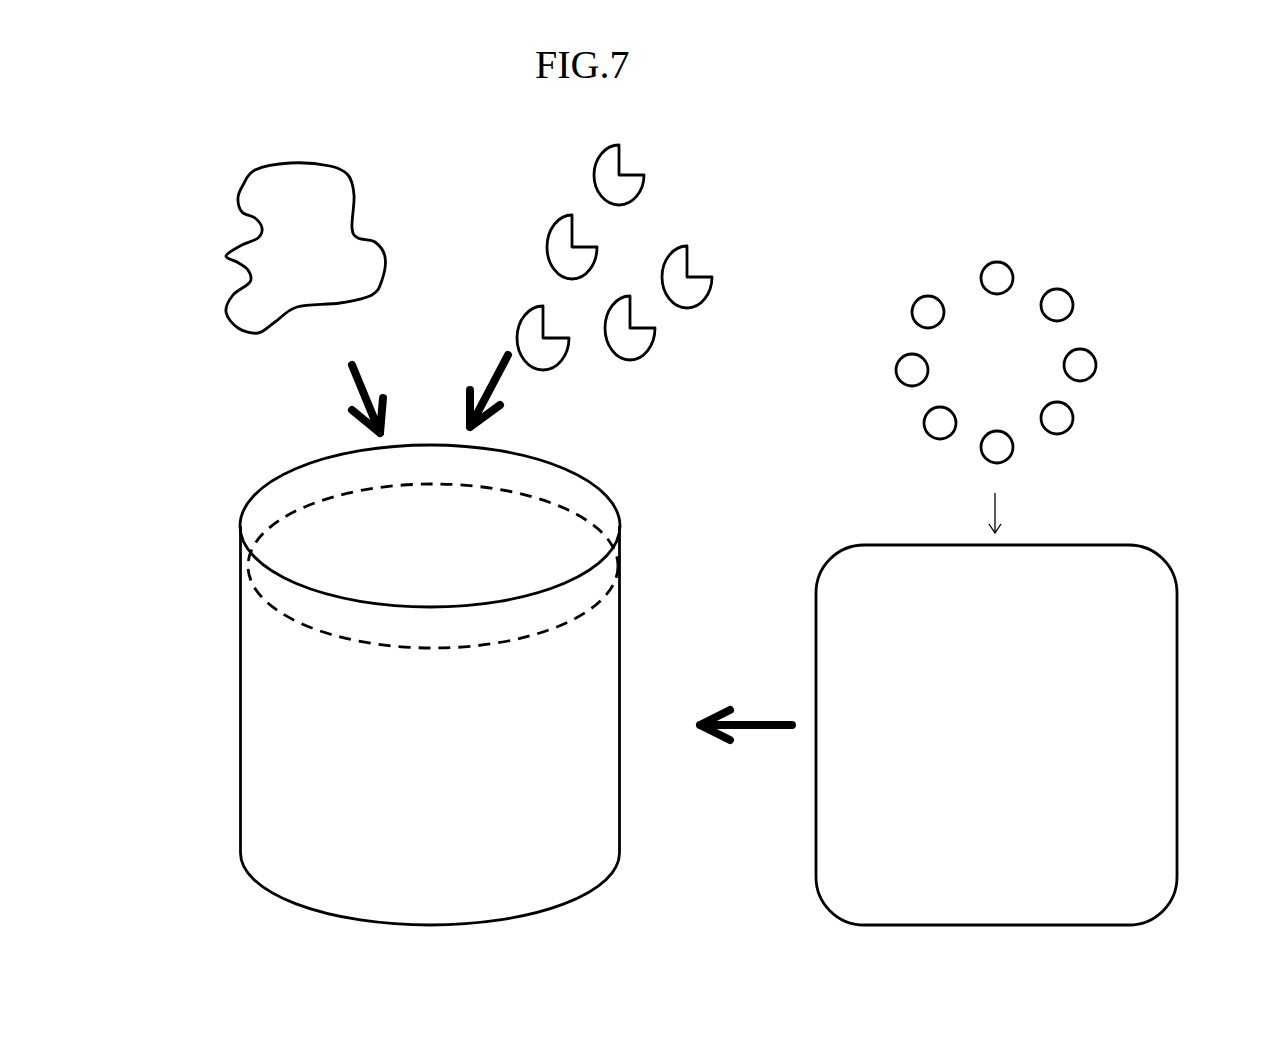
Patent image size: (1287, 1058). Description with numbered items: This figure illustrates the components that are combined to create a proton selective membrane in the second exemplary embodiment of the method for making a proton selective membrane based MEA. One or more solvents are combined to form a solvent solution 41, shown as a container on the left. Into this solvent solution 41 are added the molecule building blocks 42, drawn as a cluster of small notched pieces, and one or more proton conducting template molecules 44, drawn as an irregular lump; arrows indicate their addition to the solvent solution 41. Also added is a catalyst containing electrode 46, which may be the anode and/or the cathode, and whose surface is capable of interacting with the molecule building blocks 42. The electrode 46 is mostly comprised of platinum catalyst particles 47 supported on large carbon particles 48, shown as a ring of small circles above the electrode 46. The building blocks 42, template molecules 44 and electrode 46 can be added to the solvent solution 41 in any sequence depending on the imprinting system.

The solvent solution 41 is at (272, 694).
The molecule building blocks 42 is at (655, 177).
The proton conducting template molecule 44 is at (228, 220).
The catalyst containing electrode 46 is at (1155, 558).
The platinum catalyst particles 47 is at (1075, 293).
The carbon particles 48 is at (965, 313).